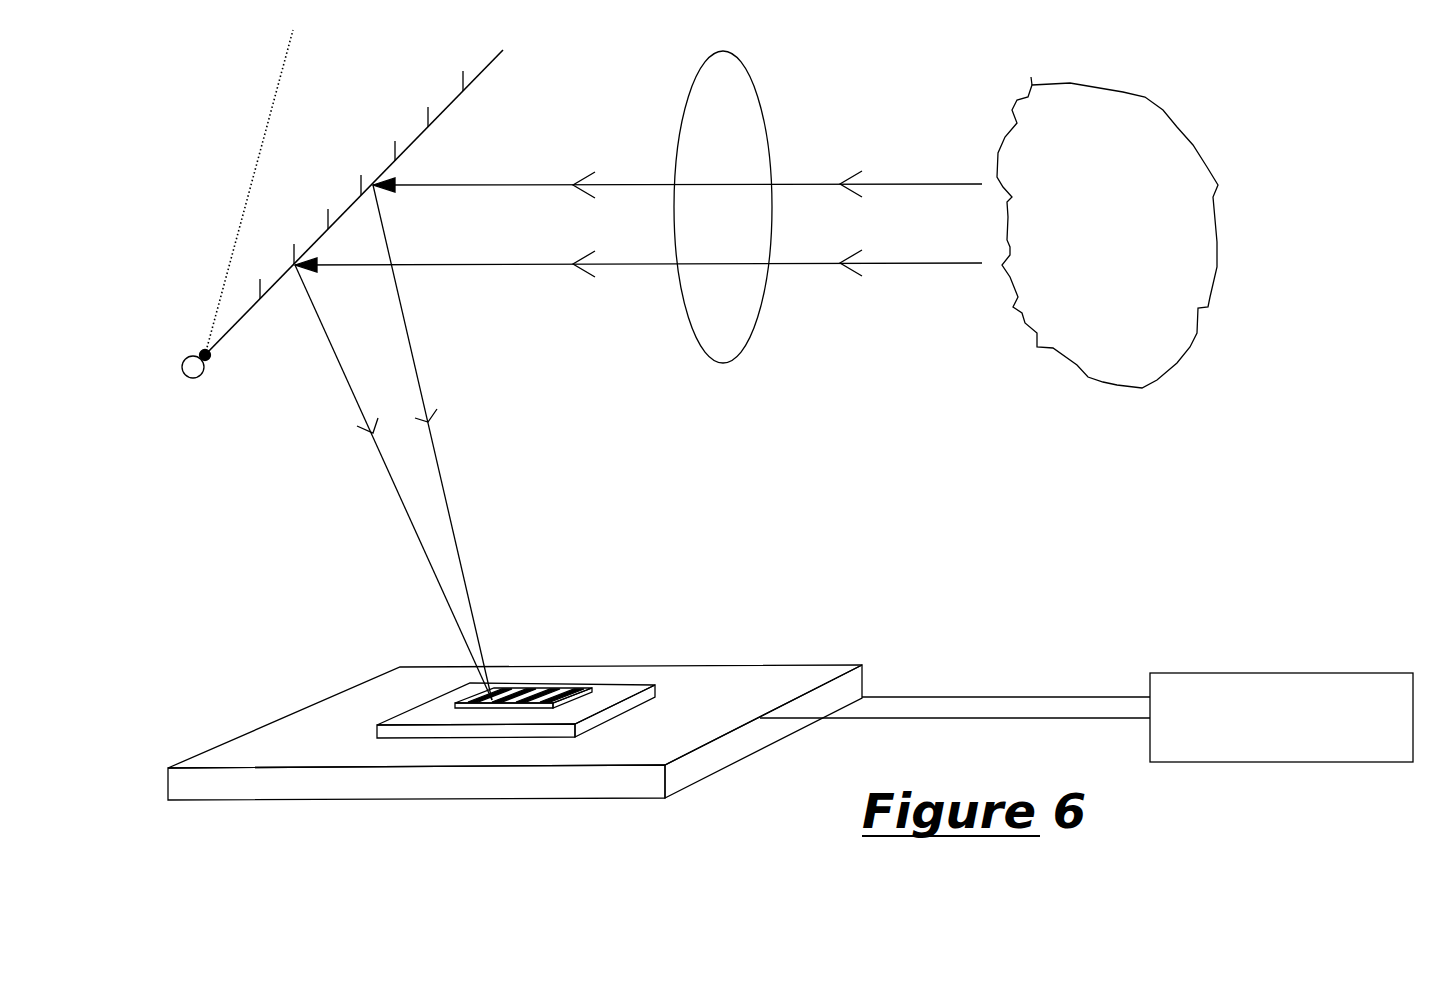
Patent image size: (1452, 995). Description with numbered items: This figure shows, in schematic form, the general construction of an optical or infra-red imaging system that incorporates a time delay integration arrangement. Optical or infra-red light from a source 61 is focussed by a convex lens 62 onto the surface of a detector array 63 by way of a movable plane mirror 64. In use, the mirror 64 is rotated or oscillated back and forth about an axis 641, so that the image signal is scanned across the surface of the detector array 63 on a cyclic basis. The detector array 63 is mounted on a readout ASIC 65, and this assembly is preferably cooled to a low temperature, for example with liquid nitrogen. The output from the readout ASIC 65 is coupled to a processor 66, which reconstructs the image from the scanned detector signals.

The source 61 is at (1172, 338).
The convex lens 62 is at (750, 330).
The detector array 63 is at (535, 678).
The movable plane mirror 64 is at (440, 118).
The axis 641 is at (210, 355).
The readout ASIC 65 is at (617, 710).
The processor 66 is at (1317, 693).